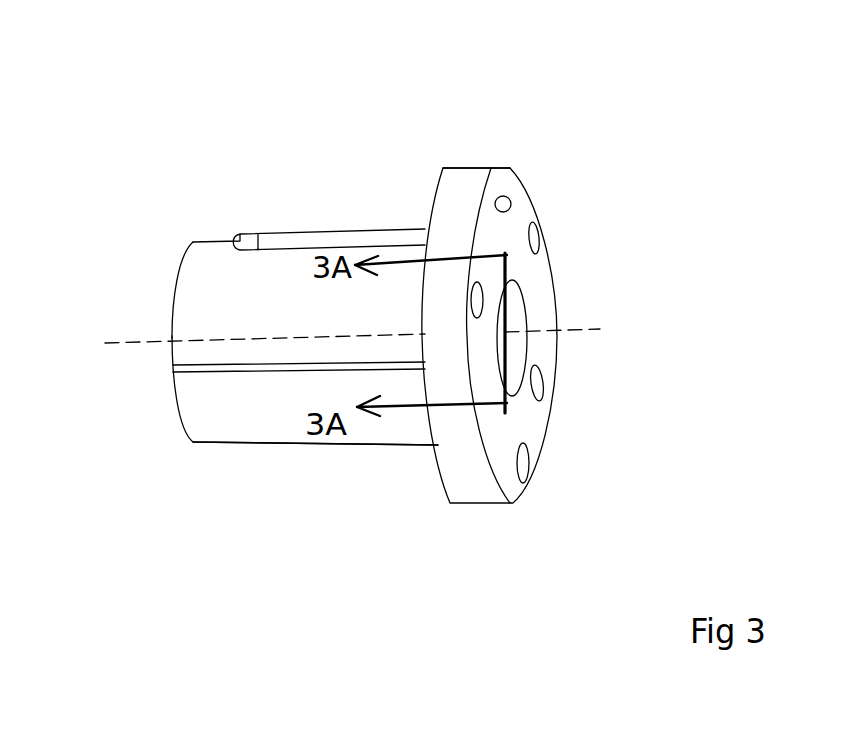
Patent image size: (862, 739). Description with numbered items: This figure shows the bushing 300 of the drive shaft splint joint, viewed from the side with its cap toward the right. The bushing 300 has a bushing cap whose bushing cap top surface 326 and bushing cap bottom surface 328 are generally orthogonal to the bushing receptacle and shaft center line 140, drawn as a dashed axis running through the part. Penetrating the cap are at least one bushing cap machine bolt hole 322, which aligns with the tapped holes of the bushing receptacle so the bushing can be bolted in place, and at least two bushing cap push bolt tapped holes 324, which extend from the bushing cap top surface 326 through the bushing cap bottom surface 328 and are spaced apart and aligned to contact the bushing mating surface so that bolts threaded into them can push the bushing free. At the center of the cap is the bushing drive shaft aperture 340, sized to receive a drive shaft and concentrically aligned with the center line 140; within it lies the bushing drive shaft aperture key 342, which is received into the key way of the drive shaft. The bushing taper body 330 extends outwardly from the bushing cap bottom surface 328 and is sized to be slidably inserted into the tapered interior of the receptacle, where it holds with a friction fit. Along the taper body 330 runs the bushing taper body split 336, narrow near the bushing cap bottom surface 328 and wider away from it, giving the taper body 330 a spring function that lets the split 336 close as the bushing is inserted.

The bushing 300 is at (628, 146).
The bushing taper body 330 is at (235, 402).
The bushing taper body split 336 is at (233, 360).
The bushing receptacle and shaft center line 140 is at (163, 340).
The bushing cap top surface 326 is at (500, 375).
The bushing cap bottom surface 328 is at (451, 176).
The bushing cap push bolt tapped hole 324 is at (505, 197).
The bushing cap machine bolt hole 322 is at (537, 243).
The bushing drive shaft aperture 340 is at (517, 312).
The bushing drive shaft aperture key 342 is at (505, 275).